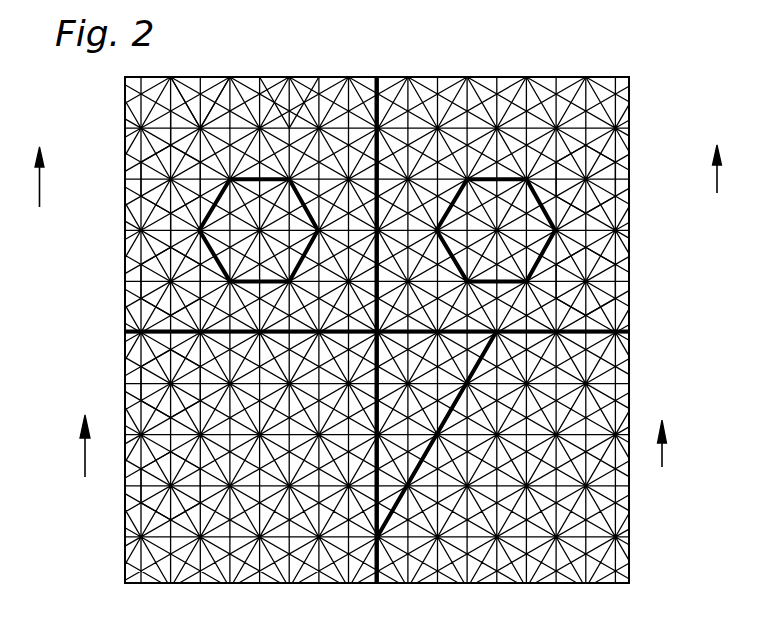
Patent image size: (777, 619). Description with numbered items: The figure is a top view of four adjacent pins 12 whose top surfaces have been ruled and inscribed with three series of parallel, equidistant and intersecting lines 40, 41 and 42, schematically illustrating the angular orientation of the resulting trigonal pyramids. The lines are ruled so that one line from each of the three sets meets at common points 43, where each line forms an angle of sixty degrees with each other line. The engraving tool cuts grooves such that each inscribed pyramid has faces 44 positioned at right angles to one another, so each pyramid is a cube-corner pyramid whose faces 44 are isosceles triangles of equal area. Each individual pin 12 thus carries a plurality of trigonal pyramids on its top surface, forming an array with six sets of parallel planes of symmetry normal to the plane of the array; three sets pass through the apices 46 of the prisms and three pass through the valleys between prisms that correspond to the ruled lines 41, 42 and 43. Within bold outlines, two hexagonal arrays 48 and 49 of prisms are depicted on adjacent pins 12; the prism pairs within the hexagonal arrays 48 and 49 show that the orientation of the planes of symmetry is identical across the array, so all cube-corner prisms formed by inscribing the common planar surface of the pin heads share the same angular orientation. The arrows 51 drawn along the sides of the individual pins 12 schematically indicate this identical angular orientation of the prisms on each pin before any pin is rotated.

The pin 12 is at (507, 77).
The parallel equidistant intersecting lines 40 is at (302, 100).
The parallel equidistant intersecting lines 41 is at (165, 227).
The parallel equidistant intersecting lines 42 is at (150, 307).
The common points of intersection 43 is at (167, 487).
The faces of trigonal pyramid 44 is at (578, 152).
The apices of the prisms 46 is at (573, 272).
The hexagonal array of prisms 48 is at (340, 135).
The hexagonal array of prisms 49 is at (628, 208).
The arrows 51 is at (39, 181).